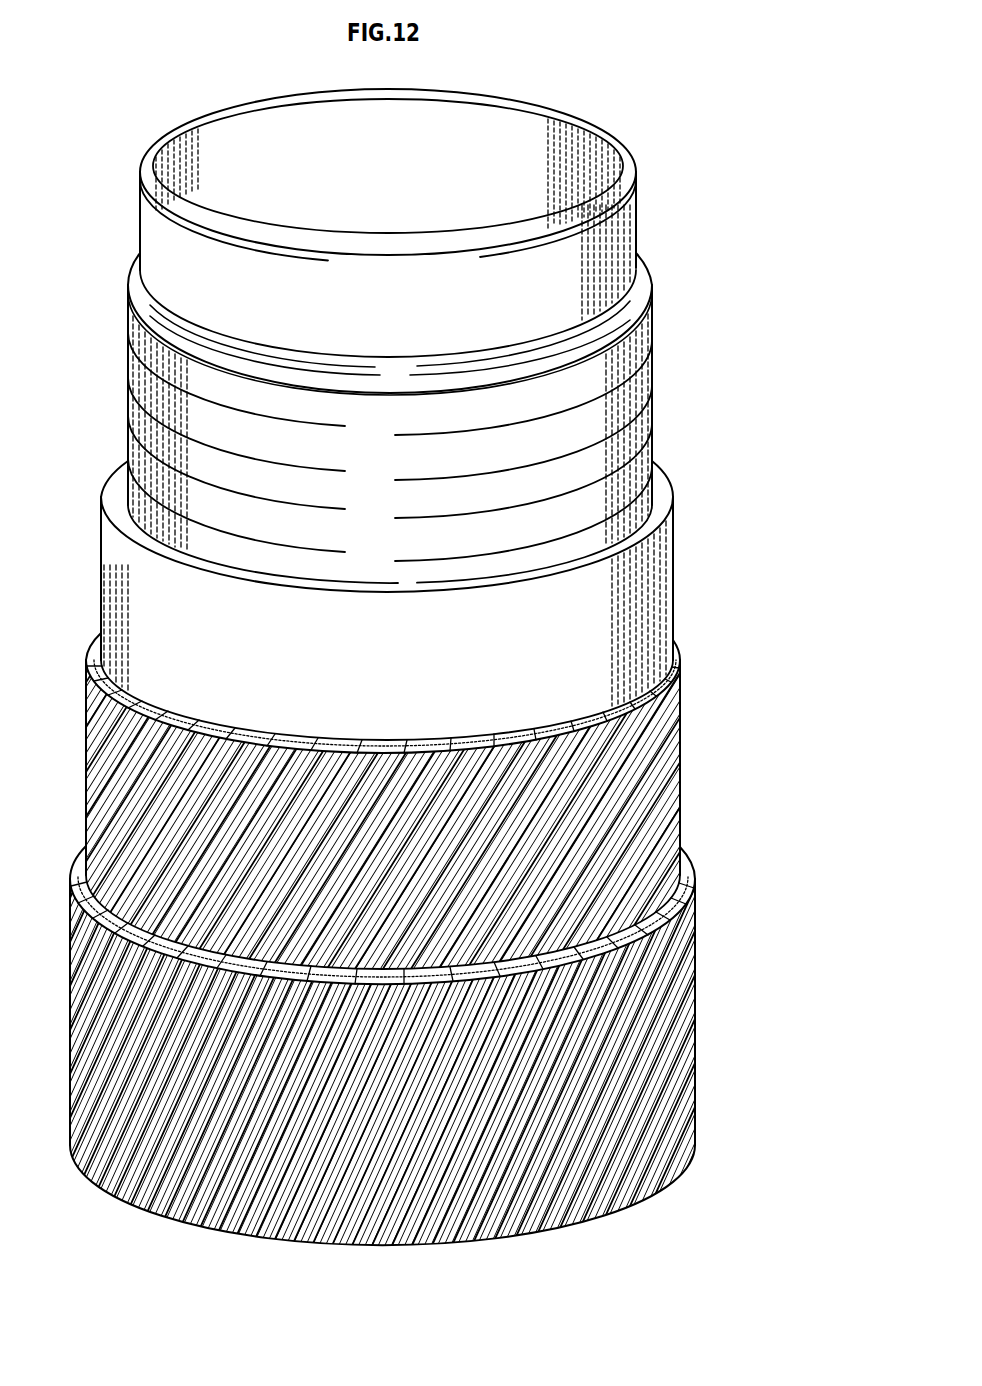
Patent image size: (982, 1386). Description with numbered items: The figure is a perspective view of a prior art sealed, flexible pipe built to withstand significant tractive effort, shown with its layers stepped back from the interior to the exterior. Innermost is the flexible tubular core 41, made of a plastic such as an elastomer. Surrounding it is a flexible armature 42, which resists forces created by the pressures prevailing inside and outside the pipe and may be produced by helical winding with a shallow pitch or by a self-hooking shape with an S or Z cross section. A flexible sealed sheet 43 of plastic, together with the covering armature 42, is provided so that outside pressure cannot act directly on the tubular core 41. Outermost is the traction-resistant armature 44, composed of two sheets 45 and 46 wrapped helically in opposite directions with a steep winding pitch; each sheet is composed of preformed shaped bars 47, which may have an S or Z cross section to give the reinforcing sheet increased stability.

The tubular core 41 is at (618, 232).
The flexible armature 42 is at (618, 413).
The flexible sealed sheet 43 is at (628, 615).
The traction-resistant armature 44 is at (818, 702).
The first sheet of traction-resistant armature 45 is at (700, 756).
The second sheet of traction-resistant armature 46 is at (710, 1012).
The preformed shaped bars 47 is at (695, 1145).